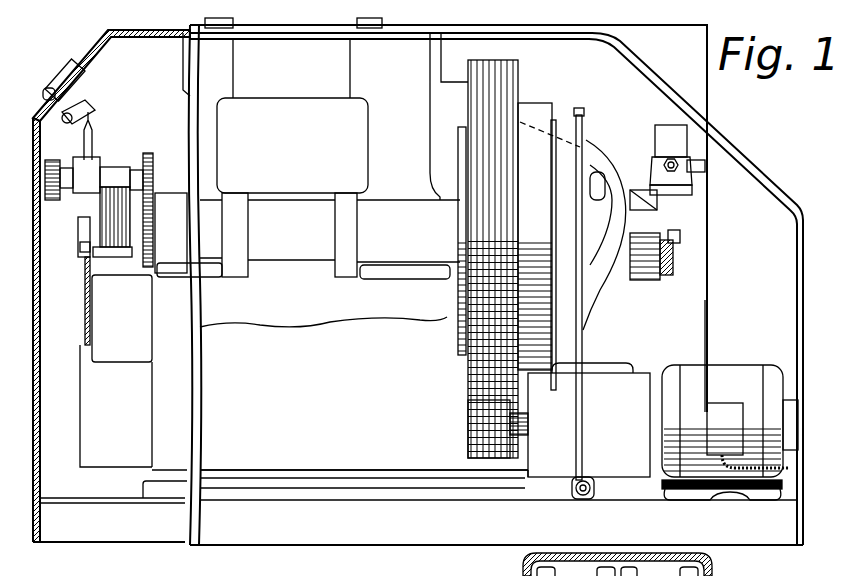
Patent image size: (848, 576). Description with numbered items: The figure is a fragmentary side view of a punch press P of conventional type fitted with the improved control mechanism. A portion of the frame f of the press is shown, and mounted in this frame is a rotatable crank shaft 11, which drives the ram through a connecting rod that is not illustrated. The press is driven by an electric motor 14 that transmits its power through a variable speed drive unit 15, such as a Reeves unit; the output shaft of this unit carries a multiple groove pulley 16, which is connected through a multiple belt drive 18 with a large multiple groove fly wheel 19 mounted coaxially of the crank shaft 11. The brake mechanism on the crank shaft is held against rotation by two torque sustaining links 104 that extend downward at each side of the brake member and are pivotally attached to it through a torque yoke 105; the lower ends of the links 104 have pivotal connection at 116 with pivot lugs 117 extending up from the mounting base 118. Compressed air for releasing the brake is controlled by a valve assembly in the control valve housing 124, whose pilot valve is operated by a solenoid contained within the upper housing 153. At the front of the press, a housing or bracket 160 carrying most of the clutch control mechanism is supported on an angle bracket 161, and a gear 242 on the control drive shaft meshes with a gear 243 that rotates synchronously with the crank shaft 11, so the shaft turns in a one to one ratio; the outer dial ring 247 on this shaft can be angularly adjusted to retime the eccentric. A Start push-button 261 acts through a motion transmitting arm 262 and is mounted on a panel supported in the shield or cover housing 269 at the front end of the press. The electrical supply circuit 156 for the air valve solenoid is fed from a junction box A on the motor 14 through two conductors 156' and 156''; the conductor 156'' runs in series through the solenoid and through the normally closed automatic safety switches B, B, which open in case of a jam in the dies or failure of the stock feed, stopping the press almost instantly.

The shield or cover housing 269 is at (118, 30).
The Start push-button 261 is at (52, 70).
The motion transmitting arm 262 is at (91, 97).
The gear 242 is at (150, 150).
The outer dial ring 247 is at (58, 200).
The housing or bracket 160 is at (113, 222).
The gear 243 is at (143, 258).
The electrical supply circuit 156 is at (113, 363).
The angle bracket 161 is at (148, 288).
The conductor 156' is at (438, 350).
The conductor 156'' is at (359, 450).
The crank shaft 11 is at (295, 248).
The frame f is at (208, 135).
The automatic safety switch B is at (218, 30).
The multiple groove fly wheel 19 is at (466, 84).
The torque yoke 105 is at (584, 126).
The control valve housing 124 is at (660, 172).
The upper housing 153 is at (668, 137).
The torque sustaining link 104 is at (584, 338).
The electric motor 14 is at (722, 372).
The junction box A is at (748, 435).
The multiple belt drive 18 is at (490, 420).
The multiple groove pulley 16 is at (458, 447).
The pivotal connection 116 is at (578, 482).
The pivot lug 117 is at (567, 495).
The variable speed drive unit 15 is at (628, 455).
The punch press P is at (277, 447).
The mounting base 118 is at (406, 538).